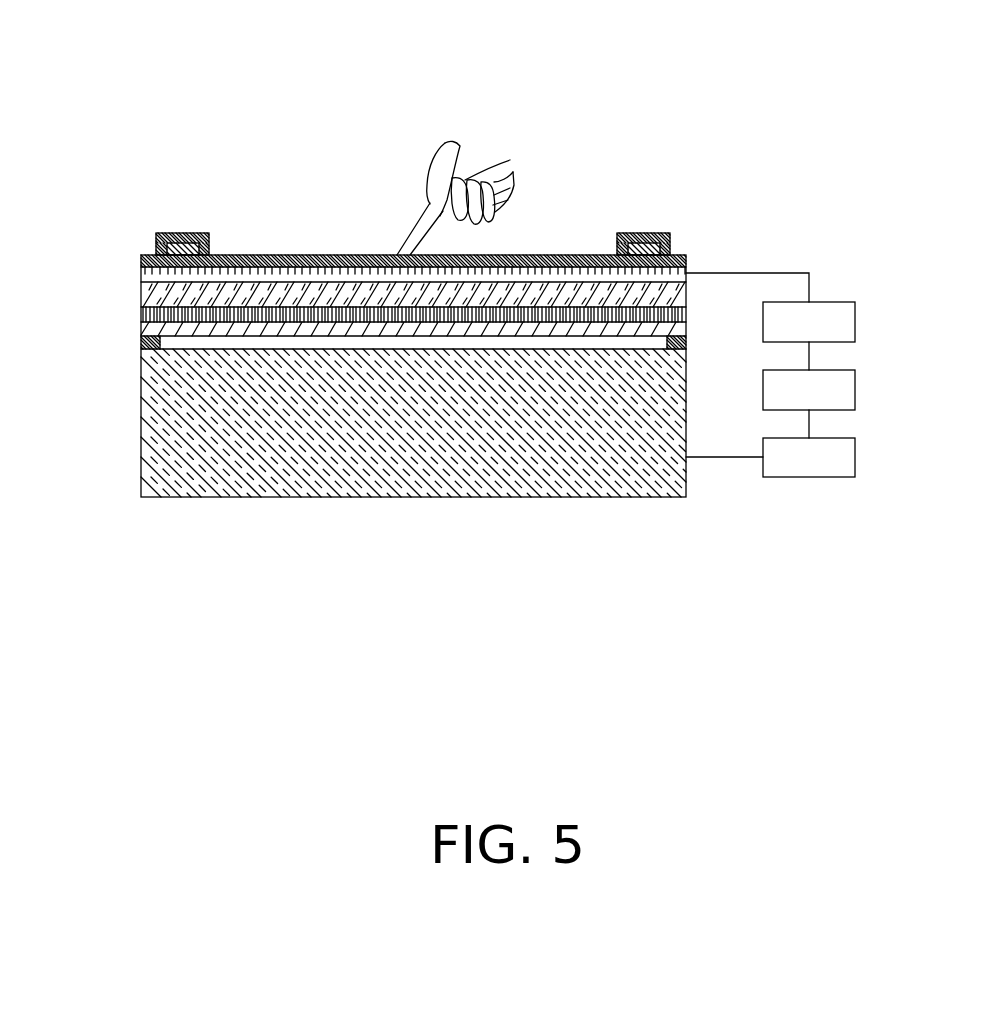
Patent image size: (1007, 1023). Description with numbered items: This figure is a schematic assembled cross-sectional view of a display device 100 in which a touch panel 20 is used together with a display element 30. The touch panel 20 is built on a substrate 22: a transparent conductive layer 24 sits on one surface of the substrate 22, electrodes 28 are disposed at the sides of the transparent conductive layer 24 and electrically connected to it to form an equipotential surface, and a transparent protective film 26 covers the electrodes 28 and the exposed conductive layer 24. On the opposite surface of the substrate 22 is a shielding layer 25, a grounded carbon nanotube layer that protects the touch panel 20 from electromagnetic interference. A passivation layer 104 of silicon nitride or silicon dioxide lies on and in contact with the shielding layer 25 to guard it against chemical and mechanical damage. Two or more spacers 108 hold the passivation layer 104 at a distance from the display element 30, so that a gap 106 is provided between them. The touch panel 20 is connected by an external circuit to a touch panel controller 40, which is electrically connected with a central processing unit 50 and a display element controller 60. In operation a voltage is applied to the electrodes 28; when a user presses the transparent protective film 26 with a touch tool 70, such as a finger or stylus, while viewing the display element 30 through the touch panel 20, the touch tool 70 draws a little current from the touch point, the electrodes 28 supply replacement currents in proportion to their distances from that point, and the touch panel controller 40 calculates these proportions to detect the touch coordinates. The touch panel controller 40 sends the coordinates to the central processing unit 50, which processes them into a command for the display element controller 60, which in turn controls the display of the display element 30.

The display device 100 is at (480, 39).
The touch panel 20 is at (62, 235).
The substrate 22 is at (141, 295).
The transparent conductive layer 24 is at (141, 275).
The shielding layer 25 is at (141, 318).
The transparent protective film 26 is at (141, 257).
The electrodes 28 is at (646, 246).
The display element 30 is at (150, 418).
The touch panel controller 40 is at (857, 322).
The central processing unit 50 is at (857, 390).
The display element controller 60 is at (857, 457).
The touch tool 70 is at (433, 173).
The passivation layer 104 is at (141, 336).
The gap 106 is at (683, 343).
The spacers 108 is at (141, 347).